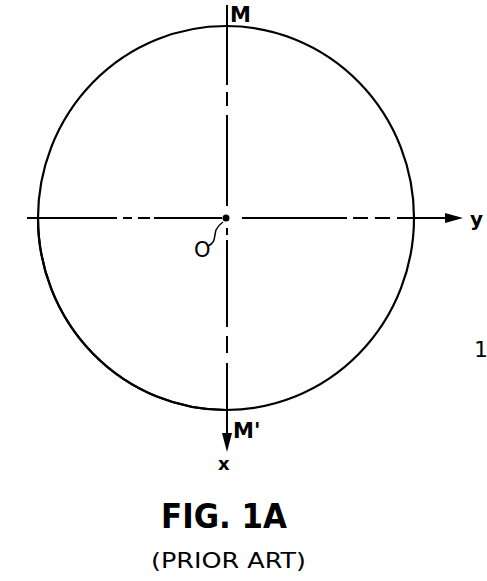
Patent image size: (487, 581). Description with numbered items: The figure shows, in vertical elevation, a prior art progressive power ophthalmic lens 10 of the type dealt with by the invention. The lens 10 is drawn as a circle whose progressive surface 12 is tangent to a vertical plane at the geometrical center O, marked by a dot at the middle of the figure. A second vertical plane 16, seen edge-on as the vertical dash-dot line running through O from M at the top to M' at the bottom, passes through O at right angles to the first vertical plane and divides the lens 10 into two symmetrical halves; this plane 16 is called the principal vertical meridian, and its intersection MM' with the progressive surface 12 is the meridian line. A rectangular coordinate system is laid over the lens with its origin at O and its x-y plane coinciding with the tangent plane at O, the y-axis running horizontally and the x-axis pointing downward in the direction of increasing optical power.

The prior art lens 10 is at (359, 74).
The progressive surface 12 is at (85, 298).
The second vertical plane 16 is at (229, 153).